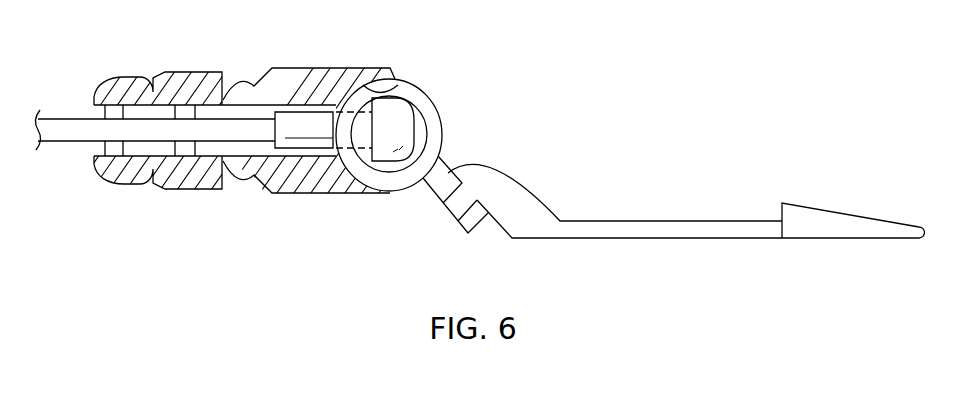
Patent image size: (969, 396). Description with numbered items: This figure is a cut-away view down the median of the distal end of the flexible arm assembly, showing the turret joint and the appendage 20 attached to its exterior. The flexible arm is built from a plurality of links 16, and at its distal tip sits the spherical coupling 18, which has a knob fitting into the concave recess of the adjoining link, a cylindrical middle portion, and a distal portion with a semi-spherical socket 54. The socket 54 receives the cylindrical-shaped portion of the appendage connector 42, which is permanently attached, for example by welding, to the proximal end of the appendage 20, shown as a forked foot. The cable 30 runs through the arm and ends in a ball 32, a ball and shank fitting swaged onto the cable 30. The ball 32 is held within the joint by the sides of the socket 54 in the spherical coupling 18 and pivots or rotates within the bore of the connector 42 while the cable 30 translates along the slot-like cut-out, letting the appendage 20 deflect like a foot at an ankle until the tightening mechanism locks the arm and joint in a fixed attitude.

The link 16 is at (188, 72).
The spherical coupling 18 is at (303, 70).
The appendage 20 is at (646, 220).
The cable 30 is at (70, 140).
The ball 32 is at (402, 122).
The appendage connector 42 is at (363, 173).
The semi-spherical socket 54 is at (397, 80).